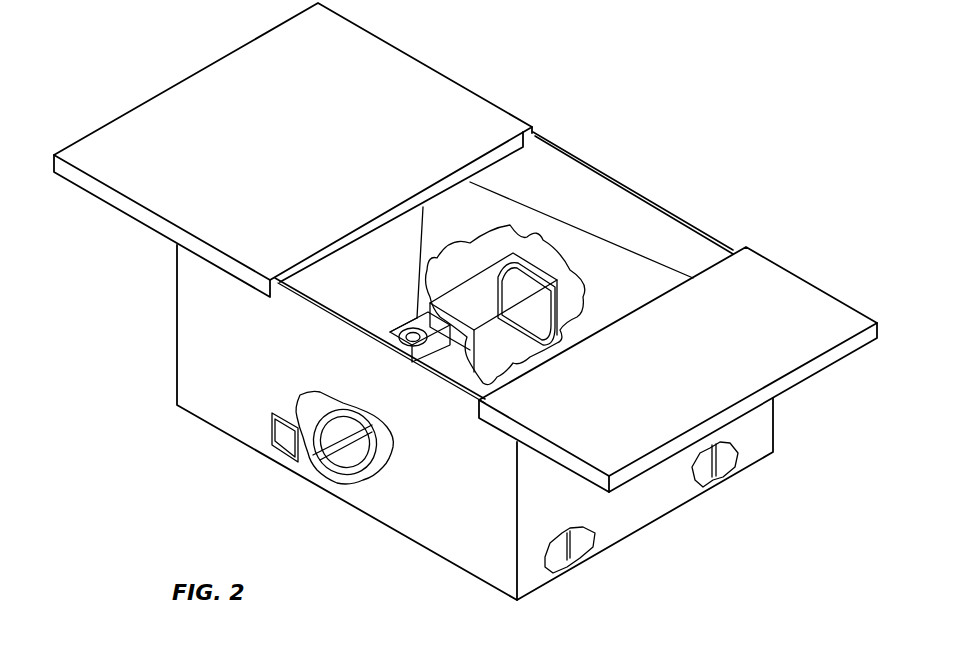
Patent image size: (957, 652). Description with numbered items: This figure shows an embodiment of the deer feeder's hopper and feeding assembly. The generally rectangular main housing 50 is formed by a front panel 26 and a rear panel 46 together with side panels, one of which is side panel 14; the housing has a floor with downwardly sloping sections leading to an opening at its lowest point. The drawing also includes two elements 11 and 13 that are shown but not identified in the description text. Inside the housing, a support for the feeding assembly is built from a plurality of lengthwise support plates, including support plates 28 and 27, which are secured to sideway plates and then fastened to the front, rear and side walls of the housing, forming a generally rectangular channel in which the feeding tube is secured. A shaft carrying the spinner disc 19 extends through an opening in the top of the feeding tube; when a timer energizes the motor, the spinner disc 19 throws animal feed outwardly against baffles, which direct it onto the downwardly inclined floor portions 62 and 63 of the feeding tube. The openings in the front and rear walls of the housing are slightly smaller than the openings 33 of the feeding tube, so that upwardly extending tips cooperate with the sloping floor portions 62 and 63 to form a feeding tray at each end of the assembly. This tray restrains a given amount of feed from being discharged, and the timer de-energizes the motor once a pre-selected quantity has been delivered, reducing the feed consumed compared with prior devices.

The second sliding cover 11 is at (775, 304).
The first sliding cover 13 is at (327, 77).
The side panel 14 is at (638, 498).
The spinner disc 19 is at (378, 336).
The front panel 26 is at (450, 527).
The length wise support plate 27 is at (717, 463).
The length wise support plate 28 is at (577, 552).
The feeding tube opening 33 is at (531, 294).
The rear panel 46 is at (707, 236).
The main housing 50 is at (767, 525).
The downwardly inclined floor portion 62 is at (339, 432).
The downwardly inclined floor portion 63 is at (510, 337).